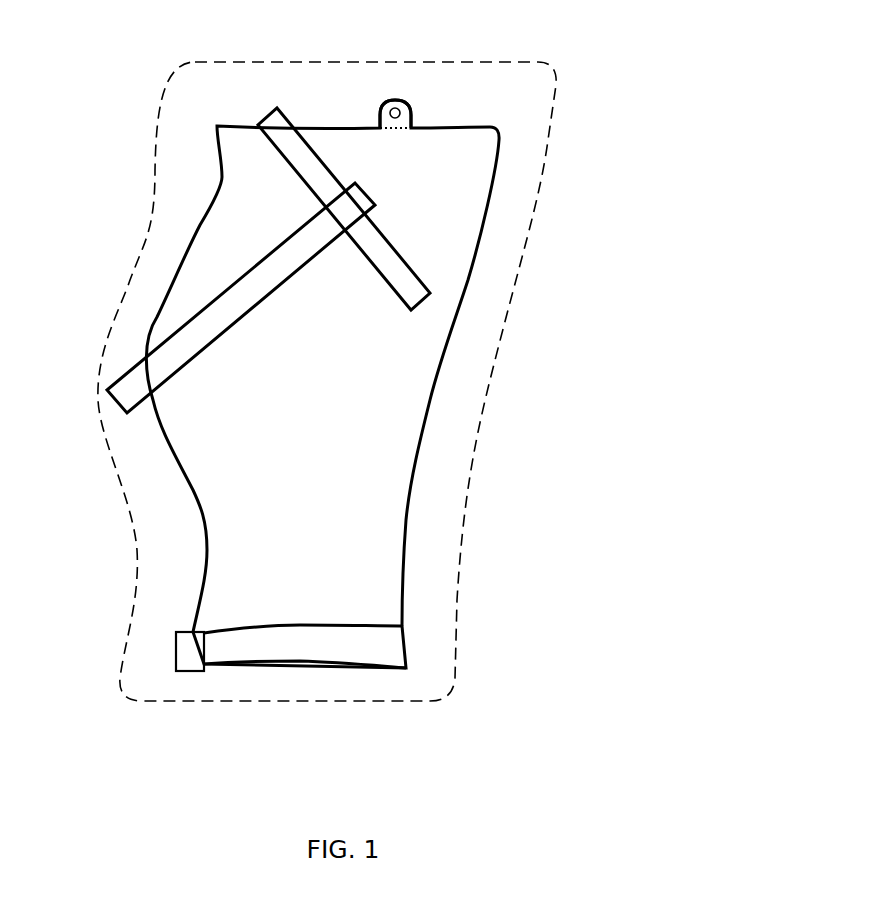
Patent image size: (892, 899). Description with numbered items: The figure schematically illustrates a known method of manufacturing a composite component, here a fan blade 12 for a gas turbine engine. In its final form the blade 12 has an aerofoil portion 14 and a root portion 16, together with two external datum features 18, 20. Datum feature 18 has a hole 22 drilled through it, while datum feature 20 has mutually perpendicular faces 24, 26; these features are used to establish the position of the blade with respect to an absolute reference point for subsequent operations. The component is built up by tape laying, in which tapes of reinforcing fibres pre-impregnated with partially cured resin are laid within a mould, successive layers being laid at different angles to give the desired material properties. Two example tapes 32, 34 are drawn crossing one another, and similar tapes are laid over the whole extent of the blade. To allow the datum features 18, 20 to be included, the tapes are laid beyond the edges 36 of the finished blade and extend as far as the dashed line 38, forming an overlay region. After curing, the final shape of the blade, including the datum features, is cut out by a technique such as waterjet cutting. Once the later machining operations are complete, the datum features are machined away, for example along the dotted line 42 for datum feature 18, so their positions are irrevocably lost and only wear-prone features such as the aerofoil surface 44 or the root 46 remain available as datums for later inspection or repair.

The fan blade 12 is at (618, 336).
The aerofoil portion 14 is at (487, 165).
The root portion 16 is at (388, 650).
The datum feature 18 is at (402, 100).
The datum feature 20 is at (190, 660).
The hole 22 is at (391, 107).
The face 24 is at (152, 652).
The face 26 is at (203, 688).
The tape 32 is at (412, 287).
The tape 34 is at (167, 357).
The edges 36 is at (432, 455).
The dashed line 38 is at (462, 572).
The dotted line 42 is at (393, 131).
The aerofoil surface 44 is at (287, 562).
The root 46 is at (287, 659).